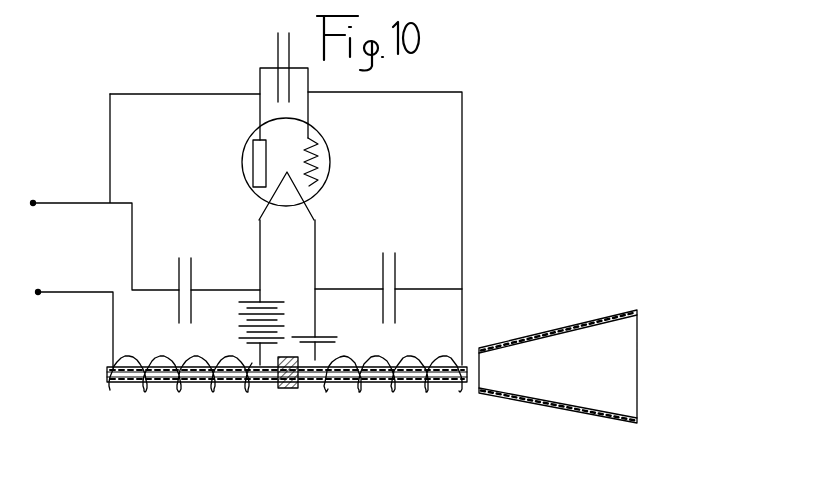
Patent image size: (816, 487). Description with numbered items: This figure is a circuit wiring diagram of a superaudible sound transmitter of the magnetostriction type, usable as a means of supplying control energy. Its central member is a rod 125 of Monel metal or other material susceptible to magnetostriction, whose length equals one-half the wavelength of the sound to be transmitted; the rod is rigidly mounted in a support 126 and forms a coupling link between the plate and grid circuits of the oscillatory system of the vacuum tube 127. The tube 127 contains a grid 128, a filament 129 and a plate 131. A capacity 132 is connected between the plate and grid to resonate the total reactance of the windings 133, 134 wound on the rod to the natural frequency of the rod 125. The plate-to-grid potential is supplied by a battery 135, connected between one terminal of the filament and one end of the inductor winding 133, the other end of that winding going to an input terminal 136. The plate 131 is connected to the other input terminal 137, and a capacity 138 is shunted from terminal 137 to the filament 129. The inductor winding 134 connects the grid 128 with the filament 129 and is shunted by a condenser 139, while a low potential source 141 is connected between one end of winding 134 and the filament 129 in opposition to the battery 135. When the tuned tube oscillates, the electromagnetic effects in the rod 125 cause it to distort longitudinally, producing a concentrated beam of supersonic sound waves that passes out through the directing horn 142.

The rod 125 is at (267, 384).
The support 126 is at (296, 390).
The vacuum tube 127 is at (323, 136).
The grid 128 is at (328, 165).
The filament 129 is at (280, 173).
The plate 131 is at (253, 153).
The capacity 132 is at (278, 48).
The inductor winding 133 is at (180, 393).
The inductor winding 134 is at (405, 389).
The battery 135 is at (243, 313).
The input terminal 136 is at (38, 293).
The input terminal 137 is at (33, 202).
The capacity 138 is at (192, 272).
The condenser 139 is at (396, 272).
The low potential source 141 is at (318, 338).
The directing horn 142 is at (567, 326).